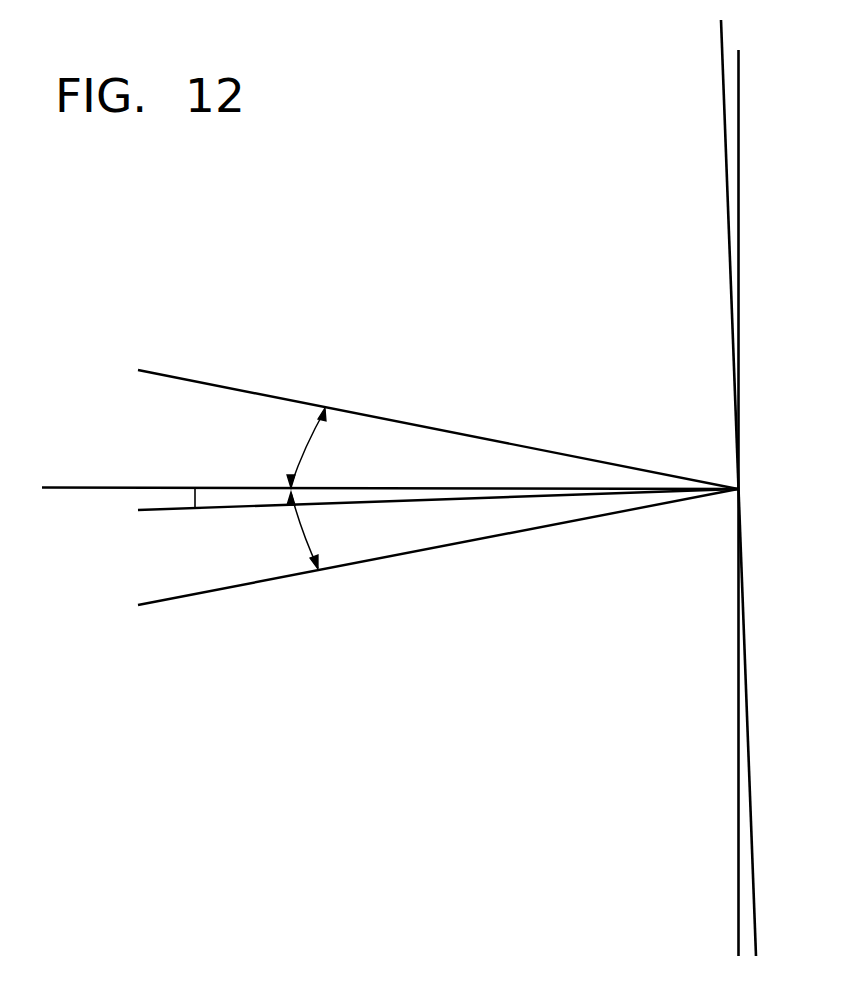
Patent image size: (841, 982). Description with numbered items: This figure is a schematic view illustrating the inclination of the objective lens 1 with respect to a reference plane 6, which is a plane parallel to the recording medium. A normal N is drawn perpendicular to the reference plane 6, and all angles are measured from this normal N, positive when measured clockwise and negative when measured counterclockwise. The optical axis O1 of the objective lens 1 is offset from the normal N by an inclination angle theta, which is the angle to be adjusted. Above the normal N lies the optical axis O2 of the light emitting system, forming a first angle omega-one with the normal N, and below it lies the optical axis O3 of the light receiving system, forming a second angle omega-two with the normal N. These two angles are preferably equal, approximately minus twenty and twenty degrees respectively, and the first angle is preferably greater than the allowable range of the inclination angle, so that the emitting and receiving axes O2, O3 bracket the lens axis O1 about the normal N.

The objective lens 1 is at (724, 158).
The reference plane 6 is at (741, 165).
The normal N is at (63, 487).
The optical axis of the objective lens O1 is at (148, 512).
The optical axis of the light emitting system O2 is at (170, 372).
The optical axis of the light receiving system O3 is at (166, 602).